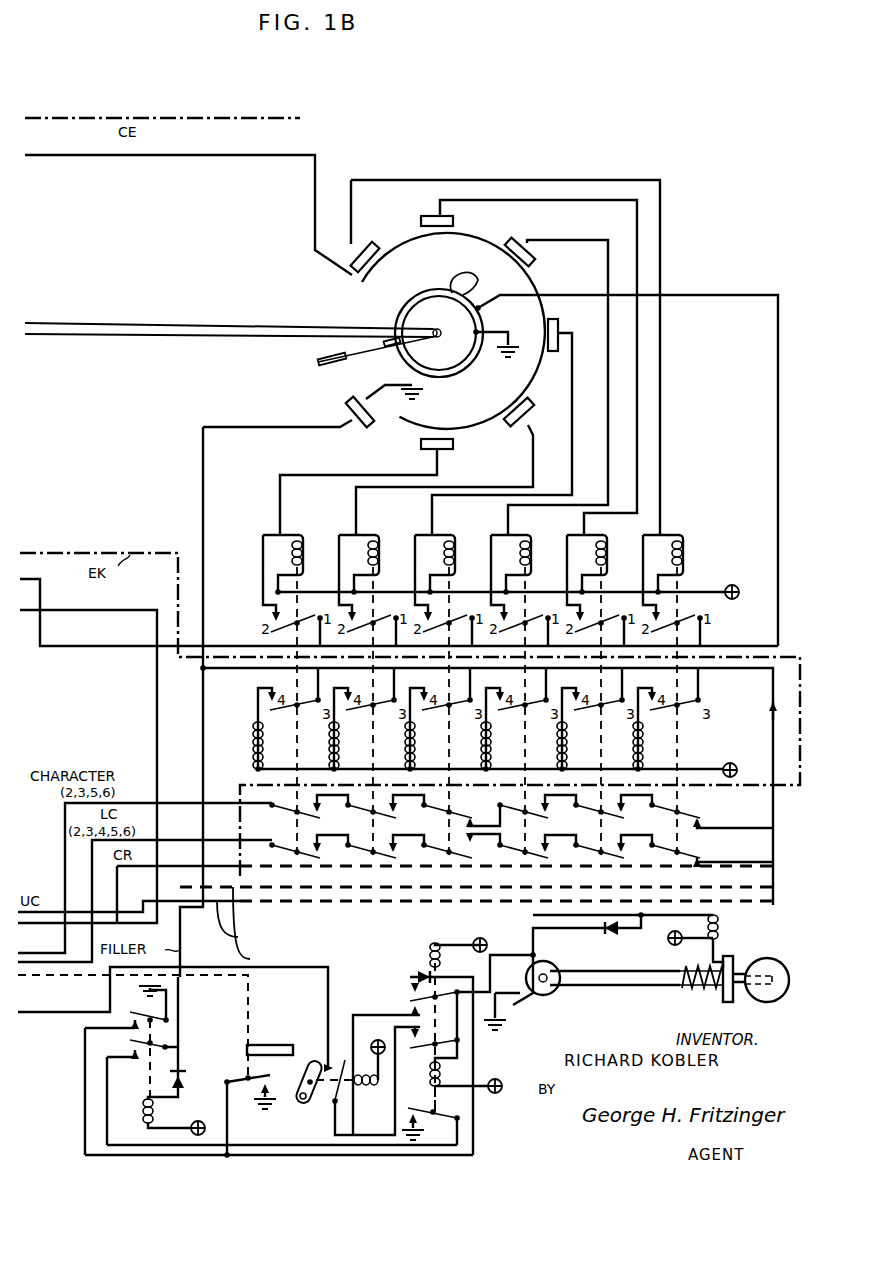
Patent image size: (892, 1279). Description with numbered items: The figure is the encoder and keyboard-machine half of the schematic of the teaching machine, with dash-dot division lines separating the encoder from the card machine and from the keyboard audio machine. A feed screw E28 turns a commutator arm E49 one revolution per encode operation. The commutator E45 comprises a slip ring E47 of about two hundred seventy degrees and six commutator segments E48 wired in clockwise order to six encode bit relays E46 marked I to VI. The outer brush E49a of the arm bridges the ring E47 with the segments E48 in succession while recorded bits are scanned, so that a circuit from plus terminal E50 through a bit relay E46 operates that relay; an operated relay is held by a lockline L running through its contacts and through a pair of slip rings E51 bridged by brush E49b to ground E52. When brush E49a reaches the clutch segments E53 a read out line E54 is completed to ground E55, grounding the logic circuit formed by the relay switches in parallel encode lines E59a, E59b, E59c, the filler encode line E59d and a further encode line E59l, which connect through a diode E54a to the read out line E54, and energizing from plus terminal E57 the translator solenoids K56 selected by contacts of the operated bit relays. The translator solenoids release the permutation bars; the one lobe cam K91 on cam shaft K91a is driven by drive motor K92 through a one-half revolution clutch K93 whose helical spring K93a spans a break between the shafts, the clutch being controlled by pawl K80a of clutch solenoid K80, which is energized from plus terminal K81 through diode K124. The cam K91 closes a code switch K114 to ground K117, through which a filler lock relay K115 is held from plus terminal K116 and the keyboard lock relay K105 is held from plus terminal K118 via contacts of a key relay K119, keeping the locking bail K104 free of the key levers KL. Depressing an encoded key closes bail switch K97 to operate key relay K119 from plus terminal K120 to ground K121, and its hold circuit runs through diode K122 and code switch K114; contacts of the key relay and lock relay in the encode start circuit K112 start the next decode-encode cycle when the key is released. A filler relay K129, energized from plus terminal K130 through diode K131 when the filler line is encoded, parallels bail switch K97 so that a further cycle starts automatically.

The feed screw E28 is at (108, 336).
The commutator E45 is at (445, 170).
The encode bit relays E46 is at (301, 546).
The slip ring E47 is at (478, 240).
The commutator segments E48 is at (417, 204).
The commutator arm E49 is at (366, 354).
The outer brush E49a is at (330, 364).
The brush E49b is at (392, 338).
The plus terminal E50 is at (757, 576).
The slip rings E51 is at (614, 459).
The ground E52 is at (514, 352).
The clutch segments E53 is at (344, 406).
The read out line E54 is at (202, 440).
The diode E54a is at (766, 703).
The ground E55 is at (420, 400).
The plus terminal E57 is at (757, 748).
The encode line E59a is at (65, 808).
The encode line E59b is at (92, 855).
The encode line E59c is at (117, 876).
The filler encode line E59d is at (249, 923).
The filler lead E59l is at (258, 926).
The translator solenoids K56 is at (258, 722).
The clutch solenoid K80 is at (718, 922).
The pawl K80a is at (718, 955).
The plus terminal K81 is at (668, 938).
The one lobe cam K91 is at (553, 990).
The cam shaft K91a is at (632, 986).
The drive motor K92 is at (770, 960).
The one-half revolution clutch K93 is at (692, 966).
The helical spring K93a is at (722, 982).
The bail switch K97 is at (250, 1086).
The blocking bail K104 is at (316, 1060).
The keyboard lock relay K105 is at (374, 1084).
The encode start circuit K112 is at (48, 1016).
The code switch K114 is at (536, 993).
The filler lock relay K115 is at (430, 1090).
The plus terminal K116 is at (516, 1112).
The ground K117 is at (504, 1022).
The plus terminal K118 is at (372, 1052).
The key relay K119 is at (430, 957).
The plus terminal K120 is at (500, 940).
The ground K121 is at (270, 1100).
The diode K122 is at (418, 976).
The diode K124 is at (608, 936).
The filler relay K129 is at (142, 1111).
The plus terminal K130 is at (220, 1108).
The diode K131 is at (186, 1071).
The lockline L is at (778, 452).
The key levers KL is at (294, 1044).